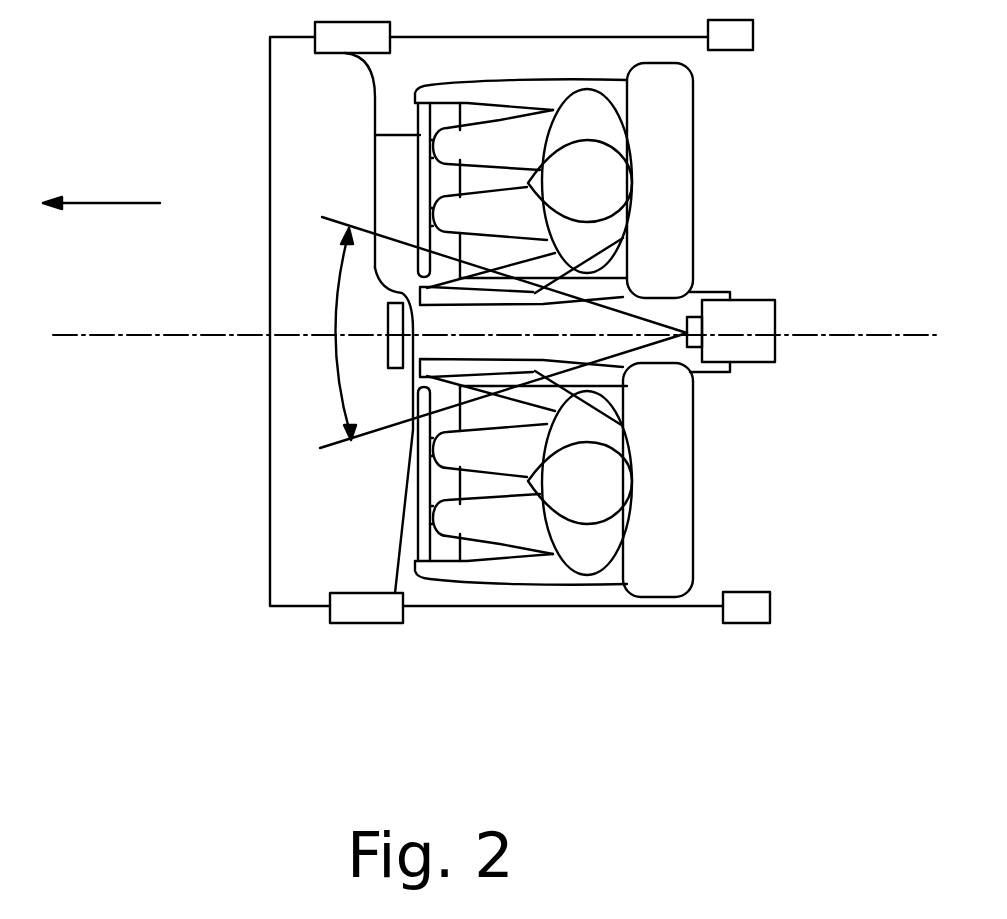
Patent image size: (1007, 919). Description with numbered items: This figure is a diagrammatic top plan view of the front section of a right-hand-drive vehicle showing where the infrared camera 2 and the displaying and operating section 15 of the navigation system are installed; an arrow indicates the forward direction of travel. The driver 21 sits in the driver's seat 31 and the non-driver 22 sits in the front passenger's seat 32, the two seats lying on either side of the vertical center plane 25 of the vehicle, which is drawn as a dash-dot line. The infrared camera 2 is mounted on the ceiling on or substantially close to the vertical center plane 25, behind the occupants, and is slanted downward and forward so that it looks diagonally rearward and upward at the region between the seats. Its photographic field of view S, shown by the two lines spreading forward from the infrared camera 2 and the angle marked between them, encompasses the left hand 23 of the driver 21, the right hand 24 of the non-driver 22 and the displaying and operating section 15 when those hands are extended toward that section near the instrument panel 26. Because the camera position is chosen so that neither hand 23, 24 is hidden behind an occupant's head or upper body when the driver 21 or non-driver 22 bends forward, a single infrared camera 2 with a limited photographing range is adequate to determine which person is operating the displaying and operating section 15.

The infrared camera 2 is at (742, 315).
The displaying and operating section 15 is at (388, 318).
The driver 21 is at (603, 187).
The non-driver 22 is at (598, 482).
The left hand 23 is at (377, 270).
The right hand 24 is at (411, 383).
The vertical center plane 25 is at (103, 337).
The instrument panel 26 is at (422, 177).
The driver's seat 31 is at (662, 118).
The front passenger's seat 32 is at (675, 423).
The field of view S is at (343, 403).